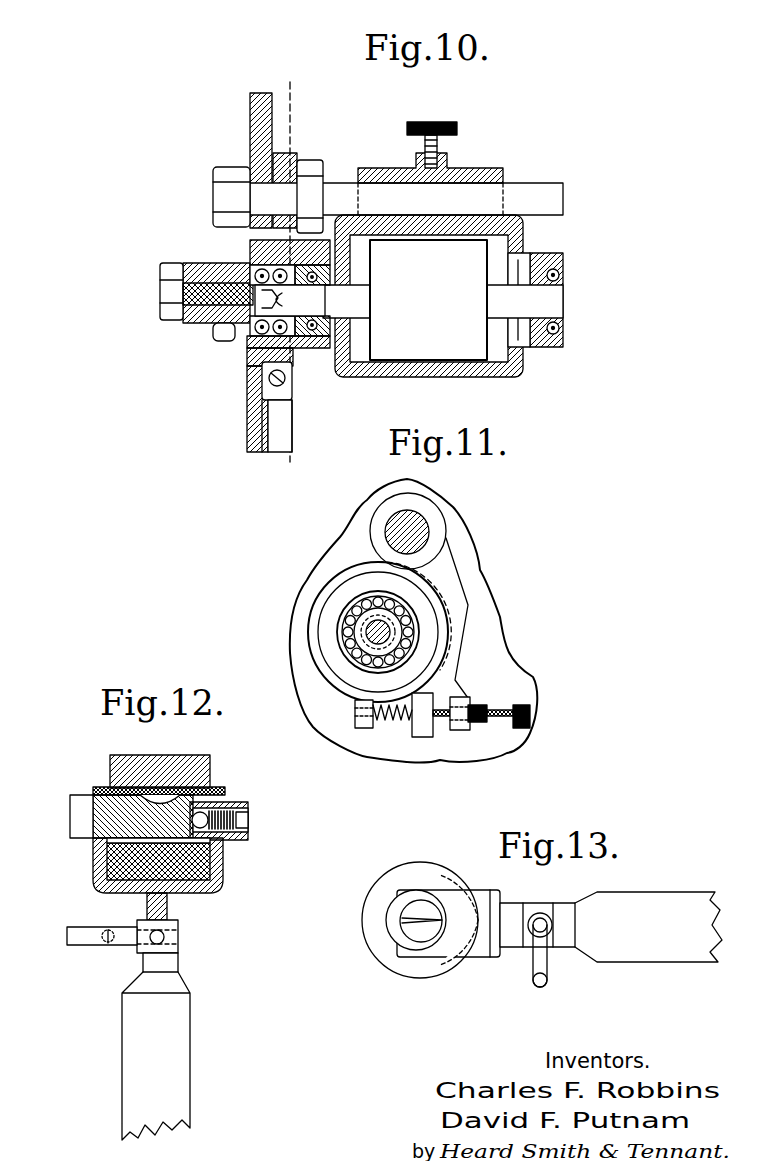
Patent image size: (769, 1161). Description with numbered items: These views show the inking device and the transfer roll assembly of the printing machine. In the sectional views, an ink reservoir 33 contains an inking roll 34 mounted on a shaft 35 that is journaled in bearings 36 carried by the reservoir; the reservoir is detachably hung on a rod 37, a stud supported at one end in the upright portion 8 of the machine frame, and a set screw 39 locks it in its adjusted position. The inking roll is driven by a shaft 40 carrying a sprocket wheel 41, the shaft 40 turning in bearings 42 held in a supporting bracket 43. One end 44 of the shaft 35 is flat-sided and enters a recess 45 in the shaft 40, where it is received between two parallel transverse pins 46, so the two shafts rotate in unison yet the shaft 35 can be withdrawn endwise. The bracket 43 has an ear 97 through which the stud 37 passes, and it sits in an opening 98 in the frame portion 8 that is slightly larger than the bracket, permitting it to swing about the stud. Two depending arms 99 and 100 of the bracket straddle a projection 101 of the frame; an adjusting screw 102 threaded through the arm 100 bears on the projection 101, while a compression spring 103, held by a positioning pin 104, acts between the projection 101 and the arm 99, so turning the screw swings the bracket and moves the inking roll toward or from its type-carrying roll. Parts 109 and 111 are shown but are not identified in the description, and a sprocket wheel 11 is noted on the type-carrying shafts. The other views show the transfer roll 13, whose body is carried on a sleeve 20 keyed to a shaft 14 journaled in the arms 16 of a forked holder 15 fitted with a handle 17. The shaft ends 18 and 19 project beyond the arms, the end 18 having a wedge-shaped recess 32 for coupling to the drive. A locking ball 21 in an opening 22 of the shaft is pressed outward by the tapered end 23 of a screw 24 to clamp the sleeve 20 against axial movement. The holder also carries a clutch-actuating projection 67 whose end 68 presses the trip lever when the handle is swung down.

In FIG. 10, the upright portion of the machine frame 8 is at (250, 123).
In FIG. 11, the upright portion of the machine frame 8 is at (326, 545).
In FIG. 10, the sprocket wheel 11 is at (298, 272).
In FIG. 12, the transfer roll 13 is at (169, 762).
In FIG. 13, the transfer roll 13 is at (398, 871).
In FIG. 12, the shaft 14 is at (120, 835).
In FIG. 13, the shaft 14 is at (422, 938).
In FIG. 12, the holder 15 is at (212, 890).
In FIG. 13, the holder 15 is at (495, 960).
In FIG. 12, the arms 16 is at (97, 787).
In FIG. 13, the arms 16 is at (450, 950).
In FIG. 12, the handle 17 is at (178, 1073).
In FIG. 13, the handle 17 is at (660, 900).
In FIG. 12, the end of the shaft 18 is at (70, 792).
In FIG. 13, the end of the shaft 18 is at (430, 902).
In FIG. 12, the end of the shaft 19 is at (248, 810).
In FIG. 12, the sleeve 20 is at (180, 850).
In FIG. 12, the locking ball 21 is at (205, 850).
In FIG. 12, the opening 22 is at (246, 835).
In FIG. 12, the tapered end 23 is at (202, 810).
In FIG. 12, the screw 24 is at (238, 820).
In FIG. 12, the wedge-shaped recess 32 is at (70, 812).
In FIG. 13, the wedge-shaped recess 32 is at (405, 922).
In FIG. 10, the ink reservoir 33 is at (510, 366).
In FIG. 10, the inking roll 34 is at (465, 346).
In FIG. 10, the shaft 35 is at (538, 318).
In FIG. 10, the bearings 36 is at (557, 265).
In FIG. 10, the rod 37 is at (495, 198).
In FIG. 11, the rod 37 is at (425, 533).
In FIG. 10, the set screw 39 is at (438, 131).
In FIG. 10, the shaft 40 is at (197, 320).
In FIG. 10, the sprocket wheel 41 is at (225, 337).
In FIG. 10, the bearings 42 is at (266, 344).
In FIG. 11, the bearings 42 is at (406, 612).
In FIG. 10, the supporting bracket 43 is at (256, 400).
In FIG. 11, the supporting bracket 43 is at (320, 606).
In FIG. 10, the flat-sided end 44 is at (256, 316).
In FIG. 11, the flat-sided end 44 is at (360, 633).
In FIG. 10, the recess 45 is at (252, 256).
In FIG. 10, the pins 46 is at (290, 300).
In FIG. 11, the pins 46 is at (377, 618).
In FIG. 12, the clutch-actuating projection 67 is at (120, 942).
In FIG. 13, the clutch-actuating projection 67 is at (547, 958).
In FIG. 12, the end of the clutch-actuating projection 68 is at (80, 942).
In FIG. 13, the end of the clutch-actuating projection 68 is at (548, 985).
In FIG. 10, the ear 97 is at (290, 153).
In FIG. 10, the opening 98 is at (262, 362).
In FIG. 11, the opening 98 is at (326, 581).
In FIG. 10, the depending arm 99 is at (290, 386).
In FIG. 11, the depending arm 99 is at (365, 728).
In FIG. 11, the depending arm 100 is at (460, 690).
In FIG. 10, the projection 101 is at (283, 397).
In FIG. 11, the projection 101 is at (423, 734).
In FIG. 11, the adjusting screw 102 is at (511, 727).
In FIG. 11, the compression spring 103 is at (392, 737).
In FIG. 10, the positioning pin 104 is at (280, 406).
In FIG. 11, the positioning pin 104 is at (355, 713).
In FIG. 10, the boss 109 is at (478, 168).
In FIG. 11, the boss 109 is at (433, 508).
In FIG. 11, the nut 111 is at (480, 706).